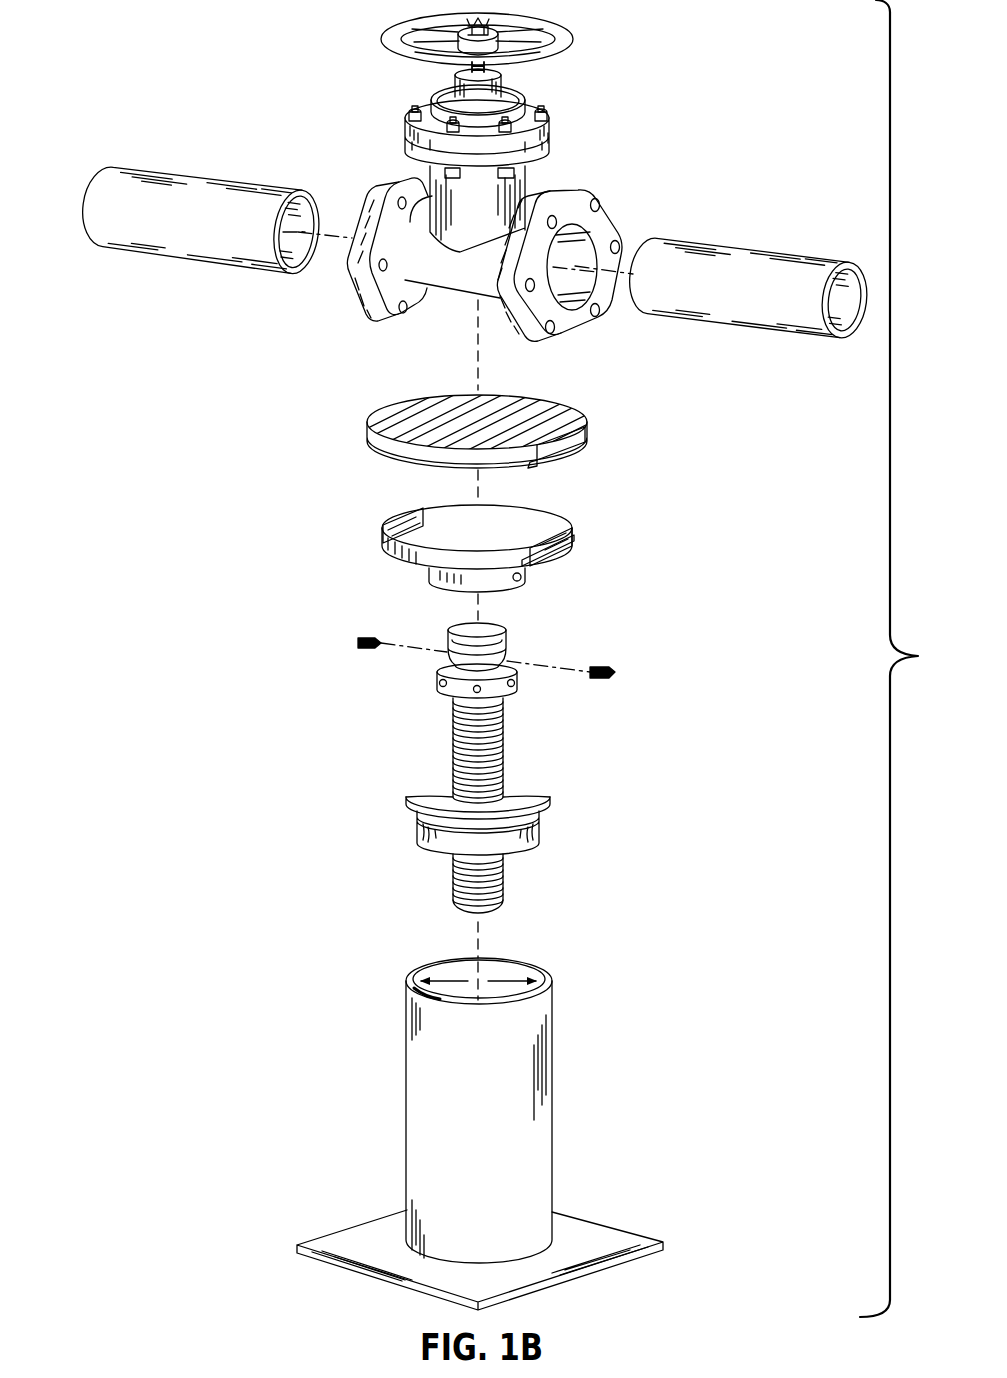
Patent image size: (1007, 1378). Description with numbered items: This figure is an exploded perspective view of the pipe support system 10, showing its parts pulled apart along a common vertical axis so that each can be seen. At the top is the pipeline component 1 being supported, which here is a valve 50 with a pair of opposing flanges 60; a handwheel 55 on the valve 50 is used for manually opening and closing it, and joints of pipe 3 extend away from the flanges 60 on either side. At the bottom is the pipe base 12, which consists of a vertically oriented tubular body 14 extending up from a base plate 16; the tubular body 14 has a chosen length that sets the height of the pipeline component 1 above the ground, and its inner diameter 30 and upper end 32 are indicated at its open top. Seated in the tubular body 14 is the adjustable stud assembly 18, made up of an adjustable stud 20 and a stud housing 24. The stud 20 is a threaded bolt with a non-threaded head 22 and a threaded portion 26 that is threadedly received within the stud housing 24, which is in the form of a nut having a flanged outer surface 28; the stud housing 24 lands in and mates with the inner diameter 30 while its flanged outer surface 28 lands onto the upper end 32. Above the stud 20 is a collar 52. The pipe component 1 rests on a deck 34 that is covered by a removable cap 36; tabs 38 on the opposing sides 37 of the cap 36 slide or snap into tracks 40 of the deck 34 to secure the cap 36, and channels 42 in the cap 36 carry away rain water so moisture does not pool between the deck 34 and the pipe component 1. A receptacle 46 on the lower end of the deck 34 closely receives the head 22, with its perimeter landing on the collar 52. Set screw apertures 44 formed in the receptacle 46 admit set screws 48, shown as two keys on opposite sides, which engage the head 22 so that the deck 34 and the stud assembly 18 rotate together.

The pipeline component 1 is at (462, 281).
The joints of pipe 3 is at (190, 226).
The pipe support system 10 is at (276, 541).
The pipe base 12 is at (358, 1022).
The tubular body 14 is at (433, 1076).
The base plate 16 is at (352, 1230).
The adjustable stud assembly 18 is at (278, 772).
The adjustable stud 20 is at (466, 834).
The head 22 is at (450, 630).
The stud housing 24 is at (420, 830).
The threaded portion 26 is at (452, 728).
The flanged outer surface 28 is at (406, 800).
The inner diameter 30 is at (448, 980).
The upper end 32 is at (440, 999).
The deck 34 is at (468, 549).
The removable cap 36 is at (484, 427).
The opposing sides 37 is at (570, 440).
The tabs 38 is at (533, 465).
The tracks 40 is at (558, 550).
The channels 42 is at (545, 400).
The set screw apertures 44 is at (538, 580).
The receptacle 46 is at (487, 582).
The set screws 48 is at (612, 670).
The valve 50 is at (458, 330).
The collar 52 is at (520, 684).
The handwheel 55 is at (563, 27).
The flanges 60 is at (397, 180).